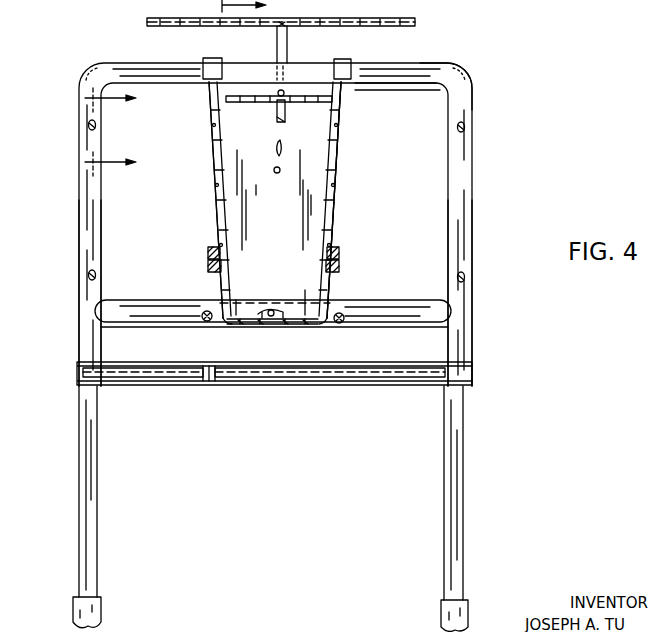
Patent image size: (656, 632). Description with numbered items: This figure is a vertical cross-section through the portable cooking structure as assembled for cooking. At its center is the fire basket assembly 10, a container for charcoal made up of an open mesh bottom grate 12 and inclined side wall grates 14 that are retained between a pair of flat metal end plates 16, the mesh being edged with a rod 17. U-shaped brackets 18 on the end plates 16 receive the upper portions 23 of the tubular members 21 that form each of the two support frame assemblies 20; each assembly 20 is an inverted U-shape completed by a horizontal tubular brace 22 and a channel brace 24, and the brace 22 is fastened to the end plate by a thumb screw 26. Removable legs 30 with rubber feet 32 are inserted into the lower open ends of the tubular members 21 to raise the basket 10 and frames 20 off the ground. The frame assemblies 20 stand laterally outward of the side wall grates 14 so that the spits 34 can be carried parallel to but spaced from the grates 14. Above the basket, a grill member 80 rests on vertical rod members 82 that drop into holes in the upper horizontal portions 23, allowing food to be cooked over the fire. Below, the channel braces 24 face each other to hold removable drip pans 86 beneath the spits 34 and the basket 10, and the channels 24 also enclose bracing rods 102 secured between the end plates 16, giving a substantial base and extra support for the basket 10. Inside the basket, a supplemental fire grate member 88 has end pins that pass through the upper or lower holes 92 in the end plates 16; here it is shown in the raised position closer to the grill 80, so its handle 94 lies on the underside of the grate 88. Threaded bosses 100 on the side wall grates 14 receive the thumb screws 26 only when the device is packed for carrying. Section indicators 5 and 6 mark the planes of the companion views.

The section line 5- 5 is at (117, 132).
The section line 6- 6 is at (233, 6).
The central fire basket assembly 10 is at (356, 215).
The bottom grate 12 is at (264, 322).
The inclined side wall grates 14 is at (219, 212).
The flat metal end plates 16 is at (350, 160).
The rod 17 is at (360, 82).
The U-shaped brackets 18 is at (206, 58).
The support frame assemblies 20 is at (476, 184).
The tubular members 21 is at (84, 245).
The horizontal tubular braces 22 is at (430, 312).
The upper portions of the tubular members 23 is at (432, 64).
The channel braces 24 is at (195, 386).
The thumb screw 26 is at (290, 324).
The removable legs 30 is at (97, 540).
The rubber feet 32 is at (101, 613).
The spits 34 is at (90, 125).
The grill member 80 is at (297, 13).
The vertically extending rod members 82 is at (287, 46).
The drip pans 86 is at (222, 372).
The supplemental fire grate member 88 is at (300, 106).
The holes 92 is at (284, 92).
The handle 94 is at (280, 110).
The threaded bosses 100 is at (207, 259).
The bracing rods 102 is at (208, 322).